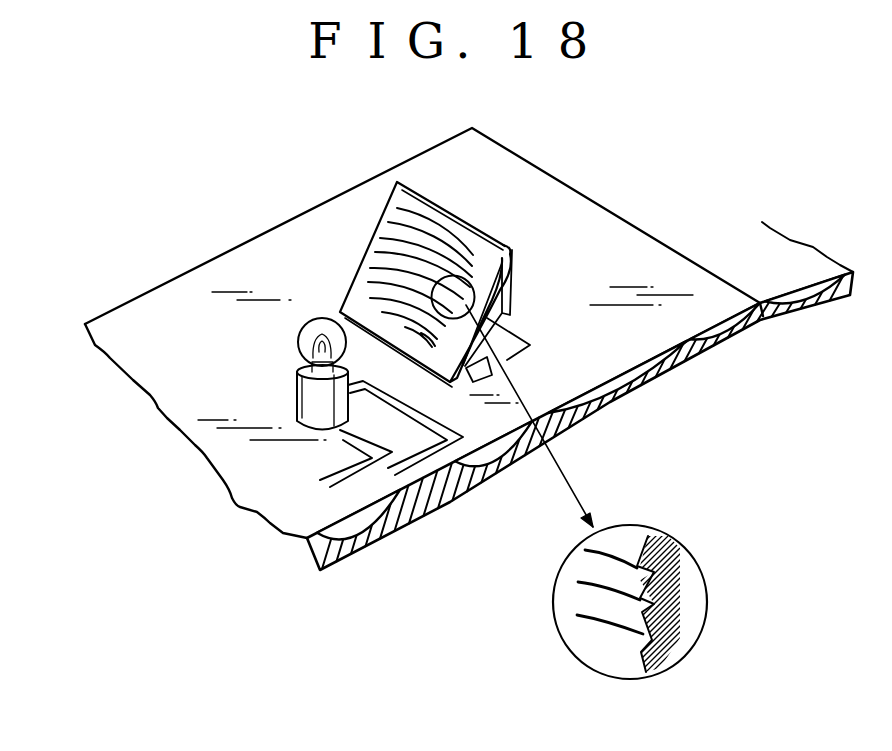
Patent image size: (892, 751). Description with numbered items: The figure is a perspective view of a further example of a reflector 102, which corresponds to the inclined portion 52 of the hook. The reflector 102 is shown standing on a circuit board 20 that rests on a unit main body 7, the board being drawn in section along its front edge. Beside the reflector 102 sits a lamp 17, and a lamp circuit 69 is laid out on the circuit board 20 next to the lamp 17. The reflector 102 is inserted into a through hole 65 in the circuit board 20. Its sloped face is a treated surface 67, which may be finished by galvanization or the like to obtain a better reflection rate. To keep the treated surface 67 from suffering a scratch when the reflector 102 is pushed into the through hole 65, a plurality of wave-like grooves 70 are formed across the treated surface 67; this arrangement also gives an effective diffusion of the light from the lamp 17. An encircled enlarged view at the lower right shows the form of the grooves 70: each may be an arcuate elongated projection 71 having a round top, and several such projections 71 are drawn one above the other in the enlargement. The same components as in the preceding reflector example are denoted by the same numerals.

The unit main body 7 is at (697, 378).
The lamp 17 is at (297, 347).
The circuit board 20 is at (637, 228).
The inclined portion 52 is at (508, 283).
The through hole 65 is at (518, 352).
The treated surface 67 is at (487, 252).
The lamp circuit 69 is at (428, 448).
The wave-like grooves 70 is at (440, 235).
The arcuate elongated projection 71 is at (607, 562).
The reflector 102 is at (516, 377).